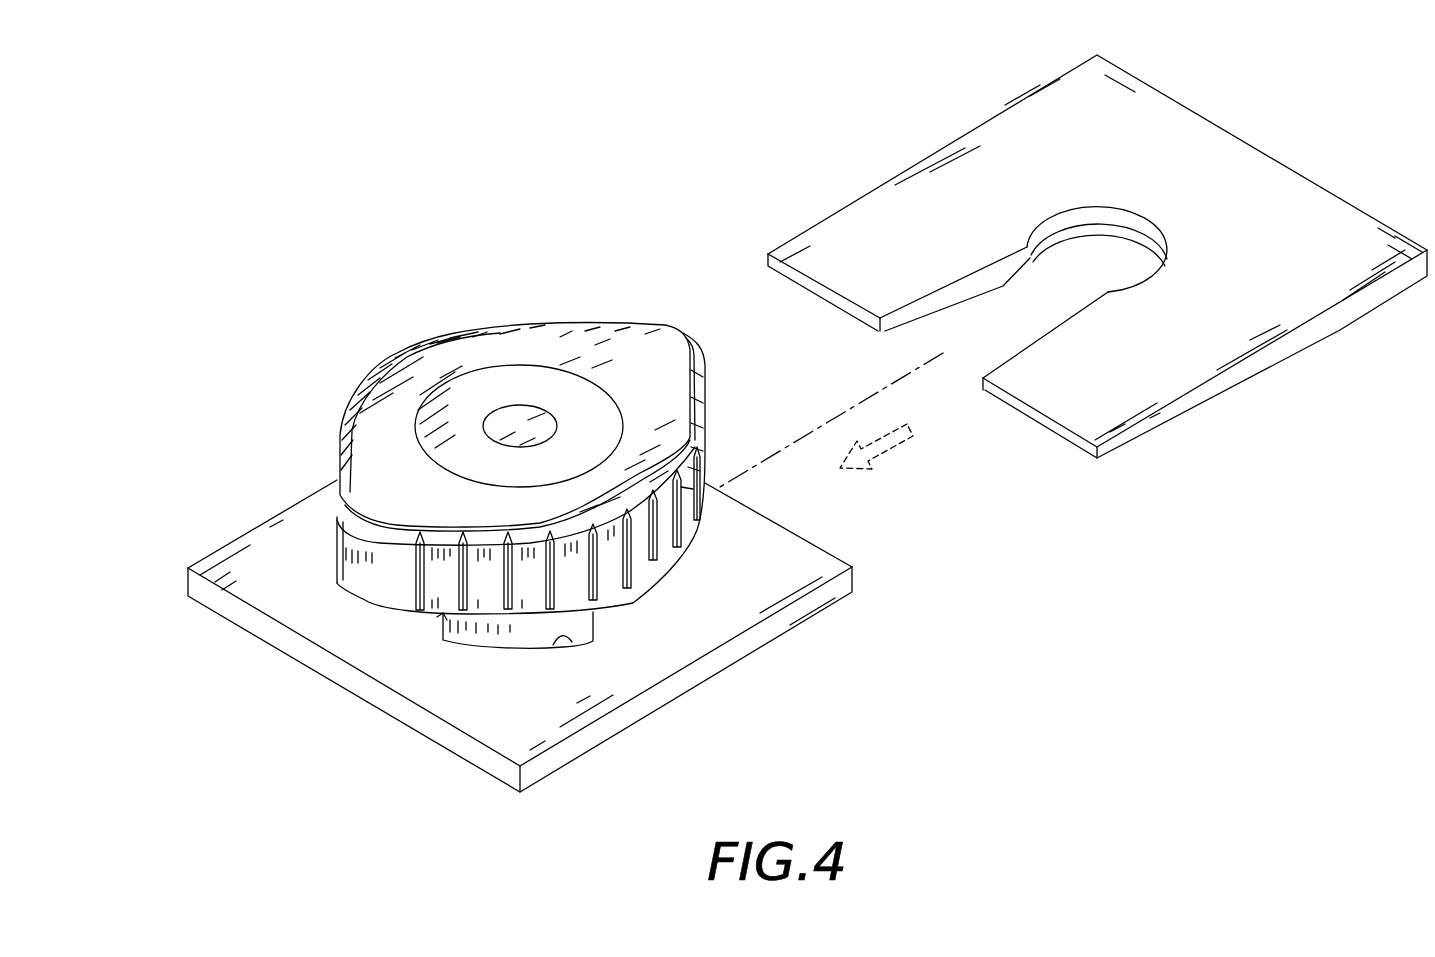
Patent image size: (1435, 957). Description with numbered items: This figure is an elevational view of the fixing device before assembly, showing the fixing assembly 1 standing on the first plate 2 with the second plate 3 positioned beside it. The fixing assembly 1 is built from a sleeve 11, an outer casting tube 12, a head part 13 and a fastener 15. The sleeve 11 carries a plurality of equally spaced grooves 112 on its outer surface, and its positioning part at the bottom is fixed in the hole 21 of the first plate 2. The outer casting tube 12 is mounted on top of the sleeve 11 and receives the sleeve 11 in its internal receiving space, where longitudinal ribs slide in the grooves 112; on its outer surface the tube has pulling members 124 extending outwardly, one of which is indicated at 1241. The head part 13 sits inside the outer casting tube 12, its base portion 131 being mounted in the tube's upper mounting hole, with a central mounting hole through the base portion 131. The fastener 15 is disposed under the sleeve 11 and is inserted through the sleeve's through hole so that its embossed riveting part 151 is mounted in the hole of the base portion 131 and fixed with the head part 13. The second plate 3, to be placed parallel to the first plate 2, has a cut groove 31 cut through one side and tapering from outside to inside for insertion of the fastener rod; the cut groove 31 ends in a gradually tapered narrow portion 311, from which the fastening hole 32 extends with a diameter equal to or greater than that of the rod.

The fixing assembly 1 is at (428, 332).
The sleeve 11 is at (468, 722).
The grooves 112 is at (440, 617).
The outer casting tube 12 is at (408, 473).
The pulling members 124 is at (406, 528).
The rib / flat portion of knurled surface 1241 is at (313, 510).
The head part 13 is at (433, 348).
The base portion 131 is at (457, 407).
The fastener 15 is at (535, 306).
The riveting part 151 is at (520, 420).
The first plate 2 is at (520, 648).
The hole 21 is at (570, 642).
The second plate 3 is at (1097, 256).
The cut groove 31 is at (938, 299).
The narrow portion 311 is at (1027, 247).
The fastening hole 32 is at (1122, 213).